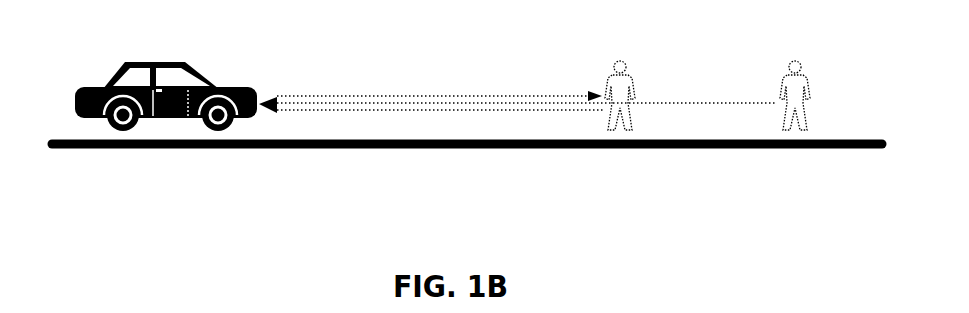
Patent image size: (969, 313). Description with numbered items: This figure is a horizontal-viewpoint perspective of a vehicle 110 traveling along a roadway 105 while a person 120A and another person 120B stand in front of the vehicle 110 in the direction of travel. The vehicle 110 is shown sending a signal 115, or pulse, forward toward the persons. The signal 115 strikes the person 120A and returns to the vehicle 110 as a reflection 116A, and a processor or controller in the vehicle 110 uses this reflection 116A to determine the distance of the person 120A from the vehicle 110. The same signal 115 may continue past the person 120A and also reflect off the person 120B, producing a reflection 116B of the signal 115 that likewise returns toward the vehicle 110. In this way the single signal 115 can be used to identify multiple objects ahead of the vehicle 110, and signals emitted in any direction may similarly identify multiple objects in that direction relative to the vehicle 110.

The roadway 105 is at (157, 147).
The vehicle 110 is at (133, 61).
The signal 115 is at (393, 95).
The reflection 116A is at (413, 111).
The reflection 116B is at (653, 104).
The person 120A is at (618, 60).
The person 120B is at (793, 59).